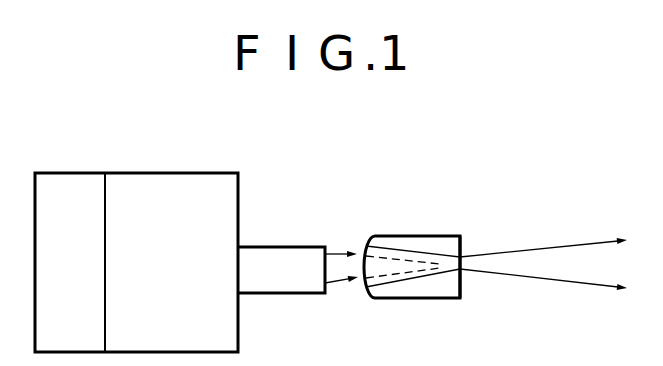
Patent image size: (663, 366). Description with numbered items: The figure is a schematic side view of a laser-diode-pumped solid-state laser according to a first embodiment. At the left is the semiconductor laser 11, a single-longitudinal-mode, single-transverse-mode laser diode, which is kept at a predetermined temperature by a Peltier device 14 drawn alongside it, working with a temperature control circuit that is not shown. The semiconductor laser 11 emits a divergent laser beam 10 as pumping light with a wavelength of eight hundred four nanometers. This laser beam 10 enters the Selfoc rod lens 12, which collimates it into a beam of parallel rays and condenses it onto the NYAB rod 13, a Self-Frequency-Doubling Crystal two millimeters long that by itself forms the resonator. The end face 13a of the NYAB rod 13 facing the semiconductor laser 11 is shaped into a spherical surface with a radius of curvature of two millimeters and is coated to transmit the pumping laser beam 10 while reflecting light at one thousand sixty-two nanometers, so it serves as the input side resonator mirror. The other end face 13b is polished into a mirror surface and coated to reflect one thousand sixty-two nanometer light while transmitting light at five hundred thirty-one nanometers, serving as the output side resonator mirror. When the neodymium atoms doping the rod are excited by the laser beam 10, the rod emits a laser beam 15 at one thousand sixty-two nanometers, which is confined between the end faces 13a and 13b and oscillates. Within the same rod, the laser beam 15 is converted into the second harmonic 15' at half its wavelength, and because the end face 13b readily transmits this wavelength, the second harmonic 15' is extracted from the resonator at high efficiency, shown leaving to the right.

The laser beam 10 is at (333, 283).
The semiconductor laser 11 is at (182, 187).
The Selfoc rod lens 12 is at (287, 255).
The NYAB rod 13 is at (429, 217).
The end face 13a is at (365, 253).
The other end face 13b is at (465, 243).
The Peltier device 14 is at (78, 192).
The laser beam 15 is at (413, 302).
The second harmonic 15' is at (543, 294).